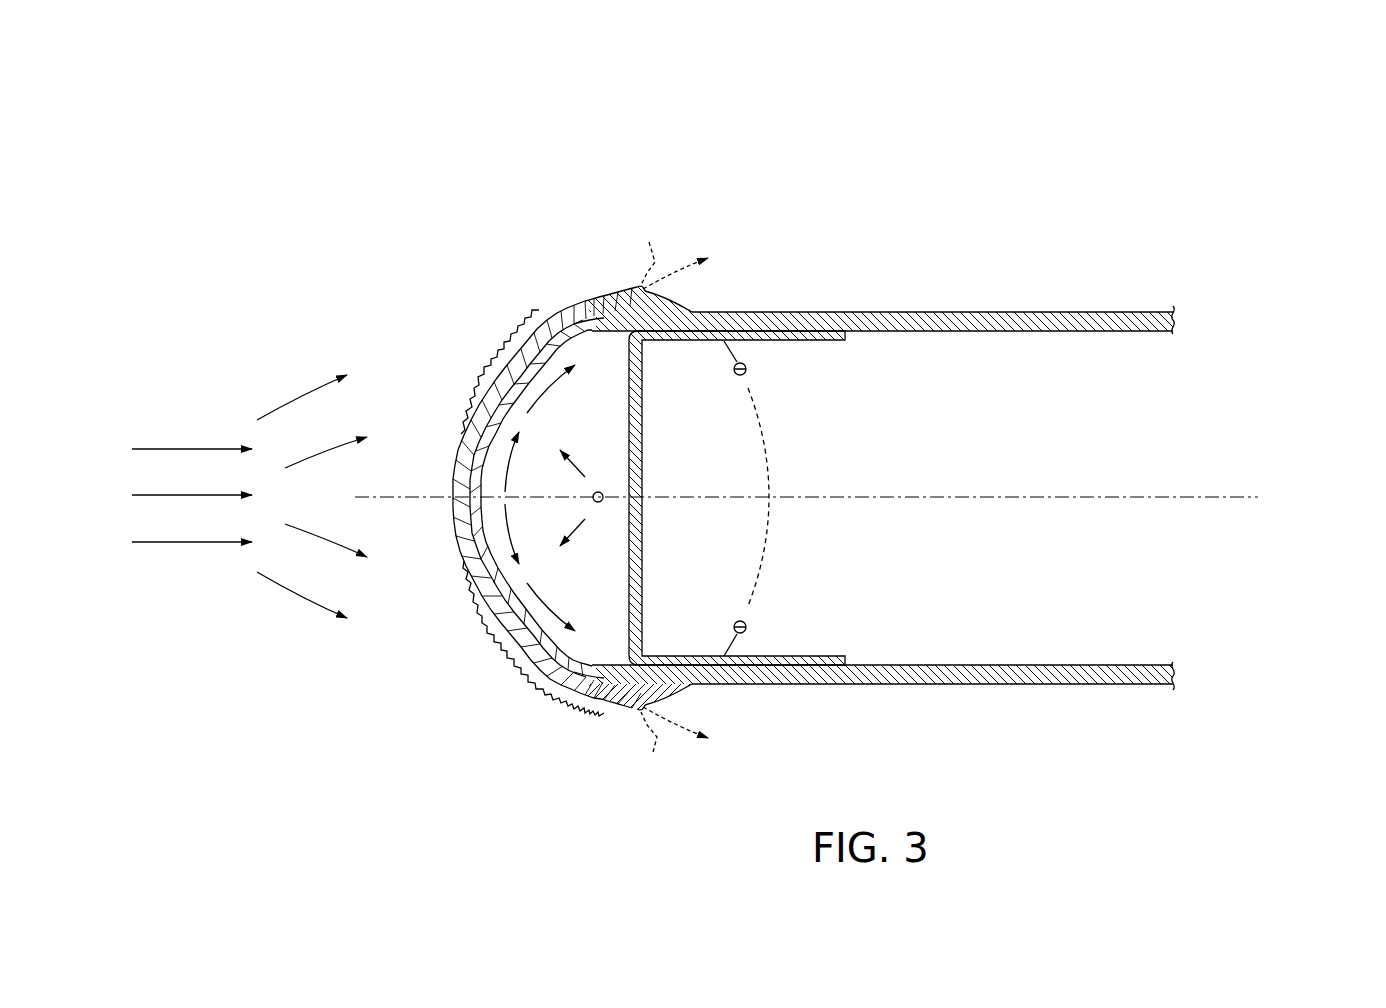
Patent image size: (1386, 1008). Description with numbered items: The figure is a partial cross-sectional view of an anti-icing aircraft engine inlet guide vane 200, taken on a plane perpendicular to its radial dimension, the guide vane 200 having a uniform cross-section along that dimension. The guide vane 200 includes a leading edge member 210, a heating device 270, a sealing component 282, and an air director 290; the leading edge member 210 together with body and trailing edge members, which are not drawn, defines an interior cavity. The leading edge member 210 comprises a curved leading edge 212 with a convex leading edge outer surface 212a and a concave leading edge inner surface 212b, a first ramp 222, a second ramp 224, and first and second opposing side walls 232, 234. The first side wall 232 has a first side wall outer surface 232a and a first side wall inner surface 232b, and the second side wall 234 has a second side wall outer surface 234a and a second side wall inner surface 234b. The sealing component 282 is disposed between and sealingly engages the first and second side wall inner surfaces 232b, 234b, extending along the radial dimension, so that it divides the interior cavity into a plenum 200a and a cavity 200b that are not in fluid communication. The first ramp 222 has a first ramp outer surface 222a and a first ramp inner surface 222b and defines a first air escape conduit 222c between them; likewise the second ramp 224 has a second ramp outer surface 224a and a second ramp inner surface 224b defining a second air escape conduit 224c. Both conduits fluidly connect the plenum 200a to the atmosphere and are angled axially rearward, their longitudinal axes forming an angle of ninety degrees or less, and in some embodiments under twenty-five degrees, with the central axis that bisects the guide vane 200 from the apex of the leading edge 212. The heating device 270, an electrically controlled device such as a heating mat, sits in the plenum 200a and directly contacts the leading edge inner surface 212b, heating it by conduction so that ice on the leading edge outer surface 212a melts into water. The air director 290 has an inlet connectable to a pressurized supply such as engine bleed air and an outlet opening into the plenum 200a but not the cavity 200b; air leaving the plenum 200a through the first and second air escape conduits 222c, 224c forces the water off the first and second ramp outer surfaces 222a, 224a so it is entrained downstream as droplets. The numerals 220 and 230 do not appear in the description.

The inlet guide vane 200 is at (1297, 508).
The plenum 200a is at (618, 424).
The cavity 200b is at (1017, 456).
The leading edge member 210 is at (471, 150).
The leading edge 212 is at (470, 470).
The leading edge outer surface 212a is at (462, 425).
The leading edge inner surface 212b is at (482, 527).
The transition section 220 is at (670, 145).
The first ramp 222 is at (635, 287).
The first ramp outer surface 222a is at (686, 305).
The first ramp inner surface 222b is at (583, 328).
The first air escape conduit 222c is at (637, 288).
The second ramp 224 is at (635, 709).
The second ramp outer surface 224a is at (686, 691).
The second ramp inner surface 224b is at (583, 668).
The second air escape conduit 224c is at (637, 711).
The body section 230 is at (903, 150).
The first side wall 232 is at (1174, 318).
The first side wall outer surface 232a is at (937, 312).
The first side wall inner surface 232b is at (937, 331).
The second side wall 234 is at (1170, 684).
The second side wall outer surface 234a is at (937, 684).
The second side wall inner surface 234b is at (928, 665).
The heating device 270 is at (495, 378).
The sealing component 282 is at (641, 448).
The air director 290 is at (602, 502).